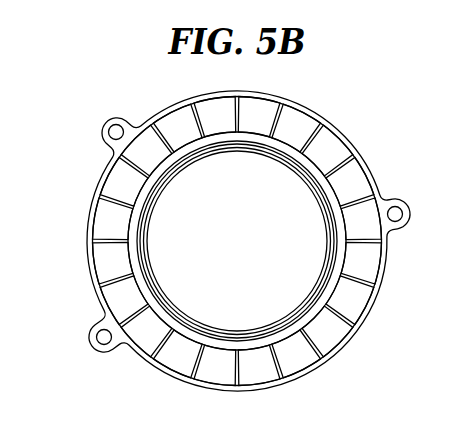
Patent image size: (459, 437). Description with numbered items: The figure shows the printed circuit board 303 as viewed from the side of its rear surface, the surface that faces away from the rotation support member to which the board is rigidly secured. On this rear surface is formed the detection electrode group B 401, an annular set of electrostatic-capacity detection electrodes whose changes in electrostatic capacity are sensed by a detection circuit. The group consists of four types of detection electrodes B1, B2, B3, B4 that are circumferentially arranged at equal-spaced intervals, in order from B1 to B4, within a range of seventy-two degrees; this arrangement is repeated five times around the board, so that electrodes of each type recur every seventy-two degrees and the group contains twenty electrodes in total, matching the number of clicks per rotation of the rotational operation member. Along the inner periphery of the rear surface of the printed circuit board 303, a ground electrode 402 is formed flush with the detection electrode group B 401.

The printed circuit board 303 is at (100, 132).
The detection electrode group B 401 is at (102, 207).
The ground electrode 402 is at (136, 247).
The detection electrode B1 is at (240, 244).
The detection electrode B2 is at (233, 244).
The detection electrode B3 is at (233, 237).
The detection electrode B4 is at (240, 237).